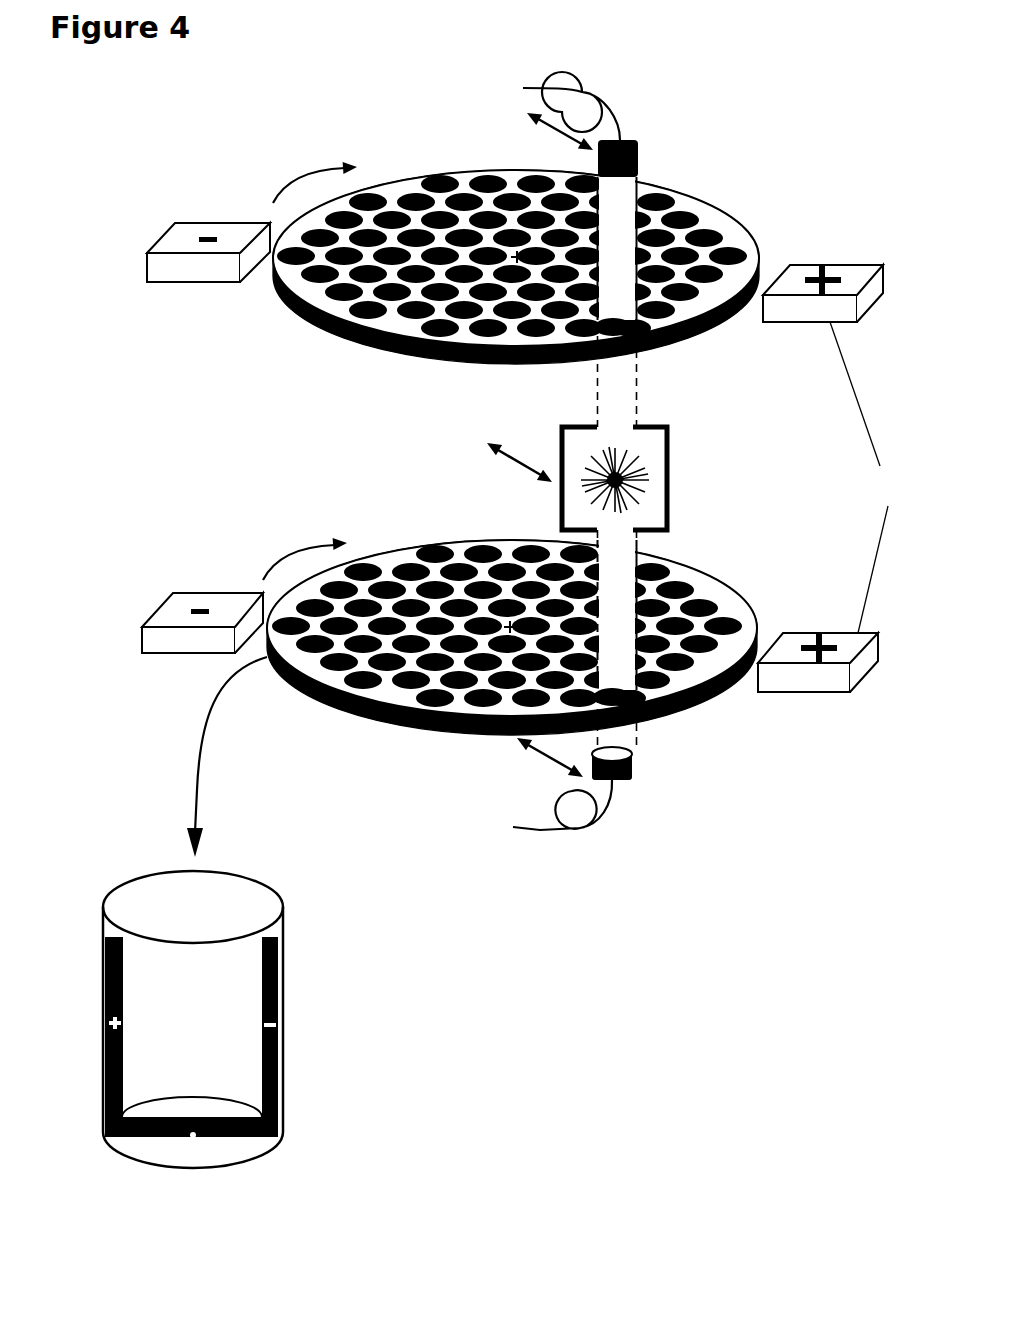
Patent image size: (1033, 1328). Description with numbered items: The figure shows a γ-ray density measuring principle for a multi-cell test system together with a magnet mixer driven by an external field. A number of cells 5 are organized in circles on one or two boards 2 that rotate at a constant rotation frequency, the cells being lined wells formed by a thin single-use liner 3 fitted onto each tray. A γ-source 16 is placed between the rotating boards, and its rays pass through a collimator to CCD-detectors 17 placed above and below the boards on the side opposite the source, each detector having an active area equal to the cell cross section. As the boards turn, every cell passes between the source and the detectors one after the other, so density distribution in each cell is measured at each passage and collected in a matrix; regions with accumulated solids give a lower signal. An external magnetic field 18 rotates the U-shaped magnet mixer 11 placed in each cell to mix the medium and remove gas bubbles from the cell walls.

The plate 2 is at (320, 331).
The lined wells 5 is at (377, 192).
The γ-source 16 is at (670, 478).
The CCD-detectors 17 is at (637, 162).
The external magnetic field 18 is at (528, 457).
The multi-cell liner 3 is at (267, 877).
The U-shaped magnet mixer 11 is at (282, 997).